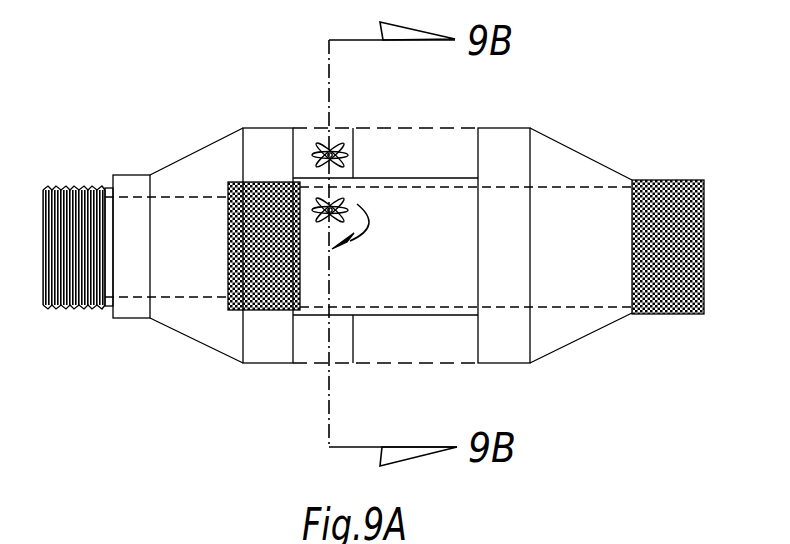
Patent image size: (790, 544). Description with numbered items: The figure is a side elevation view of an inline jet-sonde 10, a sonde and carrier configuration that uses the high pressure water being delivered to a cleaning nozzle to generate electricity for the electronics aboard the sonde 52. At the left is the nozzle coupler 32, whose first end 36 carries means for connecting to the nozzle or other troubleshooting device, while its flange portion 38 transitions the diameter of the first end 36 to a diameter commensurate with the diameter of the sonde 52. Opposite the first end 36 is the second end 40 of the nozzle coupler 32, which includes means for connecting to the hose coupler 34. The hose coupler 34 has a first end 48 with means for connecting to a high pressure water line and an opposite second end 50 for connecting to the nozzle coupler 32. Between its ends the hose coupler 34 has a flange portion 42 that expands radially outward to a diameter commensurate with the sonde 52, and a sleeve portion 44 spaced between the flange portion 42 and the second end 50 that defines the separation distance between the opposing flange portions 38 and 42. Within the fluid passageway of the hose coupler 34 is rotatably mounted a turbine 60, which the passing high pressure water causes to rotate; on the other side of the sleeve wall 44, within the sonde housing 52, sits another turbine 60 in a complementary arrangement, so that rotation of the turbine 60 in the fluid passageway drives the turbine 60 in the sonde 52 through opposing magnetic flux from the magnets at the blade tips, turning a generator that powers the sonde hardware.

The inline jet-sonde 10 is at (212, 60).
The nozzle coupler 32 is at (174, 333).
The hose coupler 34 is at (583, 153).
The first end 36 is at (82, 187).
The flange portion 38 is at (250, 128).
The second end 40 is at (263, 314).
The flange portion 42 is at (510, 363).
The sleeve portion 44 is at (430, 308).
The first end 48 is at (685, 183).
The second end 50 is at (232, 188).
The sonde 52 is at (428, 128).
The turbine 60 is at (313, 130).